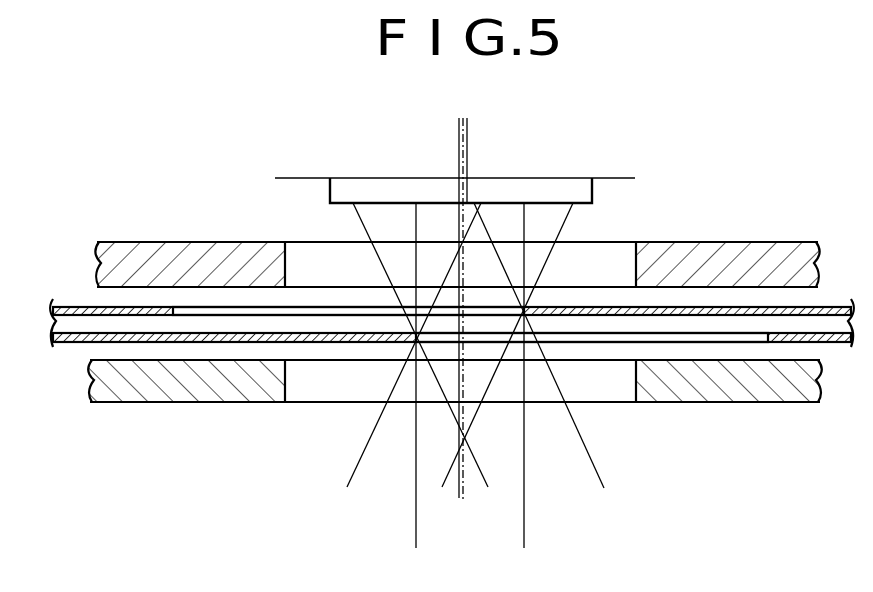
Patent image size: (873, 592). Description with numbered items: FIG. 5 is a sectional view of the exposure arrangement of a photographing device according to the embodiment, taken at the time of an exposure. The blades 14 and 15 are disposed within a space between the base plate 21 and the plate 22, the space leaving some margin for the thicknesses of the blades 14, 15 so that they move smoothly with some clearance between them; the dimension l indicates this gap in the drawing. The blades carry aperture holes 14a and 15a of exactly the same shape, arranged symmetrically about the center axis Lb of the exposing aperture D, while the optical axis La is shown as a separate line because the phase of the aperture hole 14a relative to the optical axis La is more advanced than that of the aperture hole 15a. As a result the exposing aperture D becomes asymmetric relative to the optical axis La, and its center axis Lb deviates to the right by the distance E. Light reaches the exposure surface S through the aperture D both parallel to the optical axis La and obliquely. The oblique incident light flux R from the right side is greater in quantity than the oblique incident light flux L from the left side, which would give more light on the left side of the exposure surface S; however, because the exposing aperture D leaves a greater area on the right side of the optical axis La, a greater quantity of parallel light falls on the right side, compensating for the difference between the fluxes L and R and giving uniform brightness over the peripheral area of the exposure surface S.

The base plate 21 is at (174, 265).
The plate 22 is at (208, 382).
The blade 14 is at (772, 310).
The aperture hole 14a is at (323, 307).
The blade 15 is at (802, 342).
The aperture hole 15a is at (602, 343).
The exposure surface S is at (583, 201).
The distance E is at (418, 129).
The optical axis La is at (459, 146).
The center axis Lb is at (467, 160).
The exposing aperture D is at (416, 543).
The oblique incident light flux L is at (445, 477).
The oblique incident light flux R is at (483, 478).
The gap dimension l is at (88, 286).